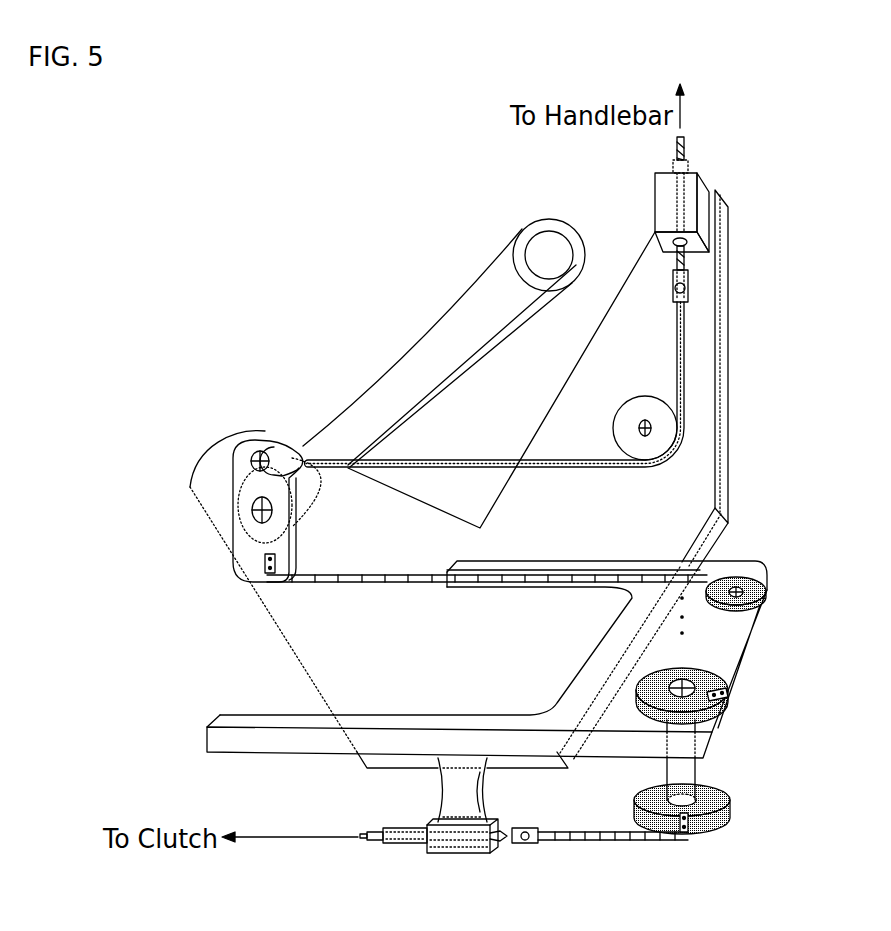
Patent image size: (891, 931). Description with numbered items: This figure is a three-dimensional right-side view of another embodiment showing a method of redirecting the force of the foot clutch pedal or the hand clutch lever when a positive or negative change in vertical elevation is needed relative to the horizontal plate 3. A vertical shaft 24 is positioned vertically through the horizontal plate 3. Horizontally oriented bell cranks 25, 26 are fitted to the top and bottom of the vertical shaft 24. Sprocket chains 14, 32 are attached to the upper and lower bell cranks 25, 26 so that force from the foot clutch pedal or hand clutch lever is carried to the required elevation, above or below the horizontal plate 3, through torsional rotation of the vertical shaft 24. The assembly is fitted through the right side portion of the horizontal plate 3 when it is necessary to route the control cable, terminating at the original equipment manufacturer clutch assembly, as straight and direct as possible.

The horizontal plate 3 is at (243, 722).
The sprocket chain 14 is at (397, 581).
The vertical shaft 24 is at (683, 763).
The bell crank 25 is at (740, 713).
The bell crank 26 is at (438, 818).
The sprocket chain 32 is at (642, 840).